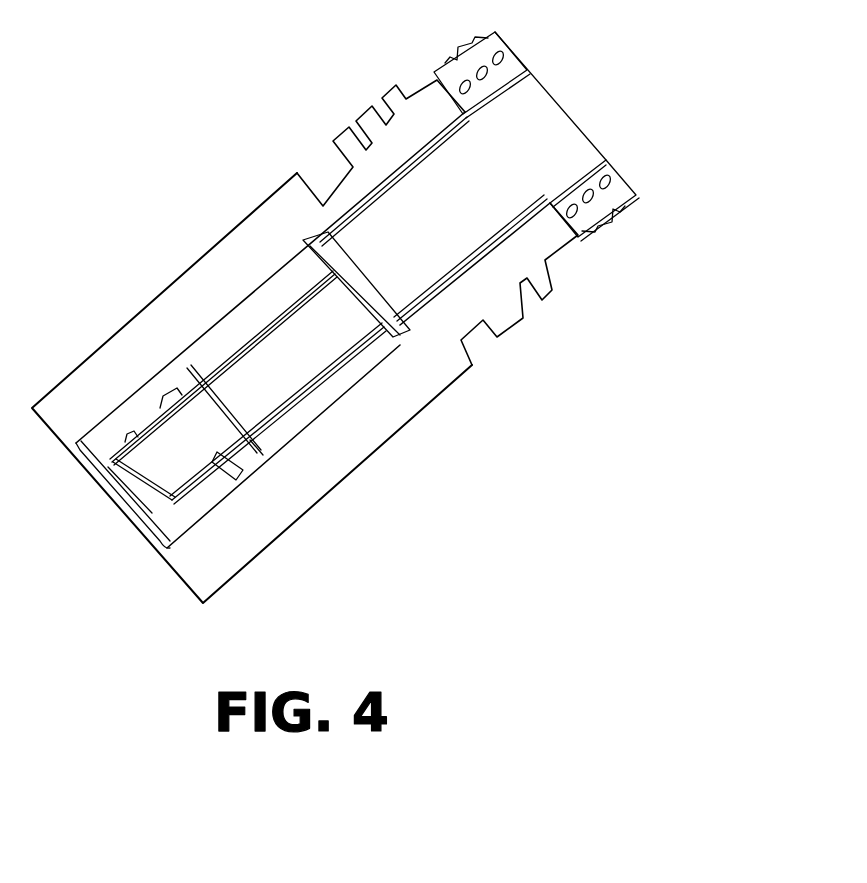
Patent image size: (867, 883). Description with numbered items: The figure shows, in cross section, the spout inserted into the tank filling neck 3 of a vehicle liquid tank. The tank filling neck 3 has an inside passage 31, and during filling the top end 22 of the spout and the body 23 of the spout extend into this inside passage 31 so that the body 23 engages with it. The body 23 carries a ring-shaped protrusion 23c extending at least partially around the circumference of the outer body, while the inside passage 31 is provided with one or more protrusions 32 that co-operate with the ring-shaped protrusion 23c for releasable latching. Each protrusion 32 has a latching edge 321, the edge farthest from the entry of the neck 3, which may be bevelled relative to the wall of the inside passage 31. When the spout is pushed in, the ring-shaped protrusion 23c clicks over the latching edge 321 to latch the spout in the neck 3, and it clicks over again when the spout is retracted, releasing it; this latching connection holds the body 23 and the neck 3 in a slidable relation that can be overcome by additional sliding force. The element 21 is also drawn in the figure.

The tank filling neck 3 is at (252, 383).
The inside passage 31 is at (270, 277).
The protrusion 32 is at (408, 216).
The latching edge 321 is at (315, 231).
The plug connector housing 21 is at (575, 136).
The top end 22 is at (194, 506).
The body 23 is at (330, 310).
The ring-shaped protrusion 23c is at (398, 332).